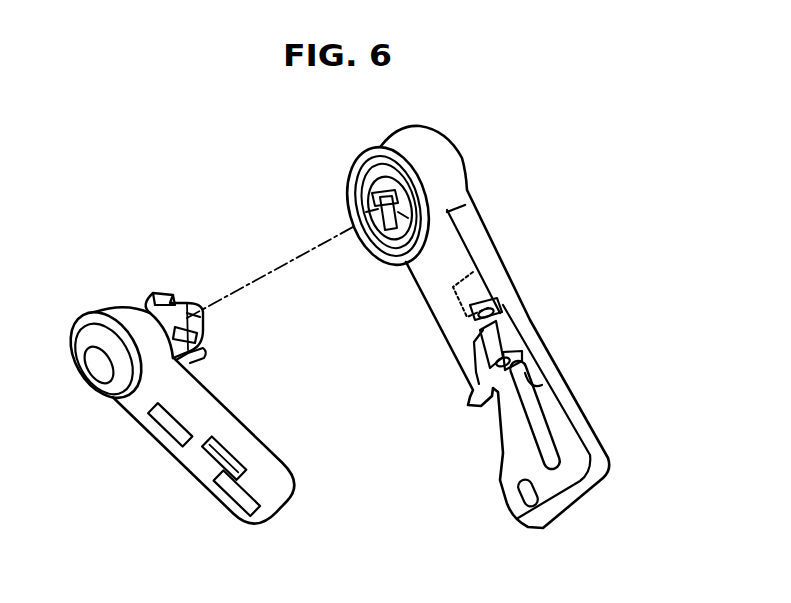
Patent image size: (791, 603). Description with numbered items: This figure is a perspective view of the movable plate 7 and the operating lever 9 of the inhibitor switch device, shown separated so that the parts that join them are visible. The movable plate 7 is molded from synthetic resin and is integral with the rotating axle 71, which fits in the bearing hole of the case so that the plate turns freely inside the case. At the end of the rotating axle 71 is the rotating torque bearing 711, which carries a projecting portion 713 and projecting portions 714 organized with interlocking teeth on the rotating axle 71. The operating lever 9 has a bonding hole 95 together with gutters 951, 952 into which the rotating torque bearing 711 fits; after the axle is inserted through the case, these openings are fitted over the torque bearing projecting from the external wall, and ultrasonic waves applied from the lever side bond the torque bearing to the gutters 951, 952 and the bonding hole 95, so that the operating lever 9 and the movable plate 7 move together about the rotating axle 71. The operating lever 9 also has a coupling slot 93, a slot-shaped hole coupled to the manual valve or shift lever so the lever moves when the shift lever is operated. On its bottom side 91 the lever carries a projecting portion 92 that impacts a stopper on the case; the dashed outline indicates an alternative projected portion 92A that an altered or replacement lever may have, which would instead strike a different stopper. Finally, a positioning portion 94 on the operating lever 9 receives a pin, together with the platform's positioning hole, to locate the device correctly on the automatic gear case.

The movable plate 7 is at (208, 488).
The rotating axle 71 is at (140, 307).
The rotating torque bearing 711 is at (198, 354).
The projecting portion 713 is at (193, 303).
The projecting portions 714 is at (170, 293).
The operating lever 9 is at (599, 429).
The bottom side 91 is at (542, 385).
The projecting portion 92 is at (508, 333).
The projected portion 92A is at (473, 290).
The coupling slot 93 is at (556, 472).
The positioning portion 94 is at (515, 508).
The bonding hole 95 is at (350, 200).
The gutter 951 is at (385, 212).
The gutter 952 is at (353, 228).